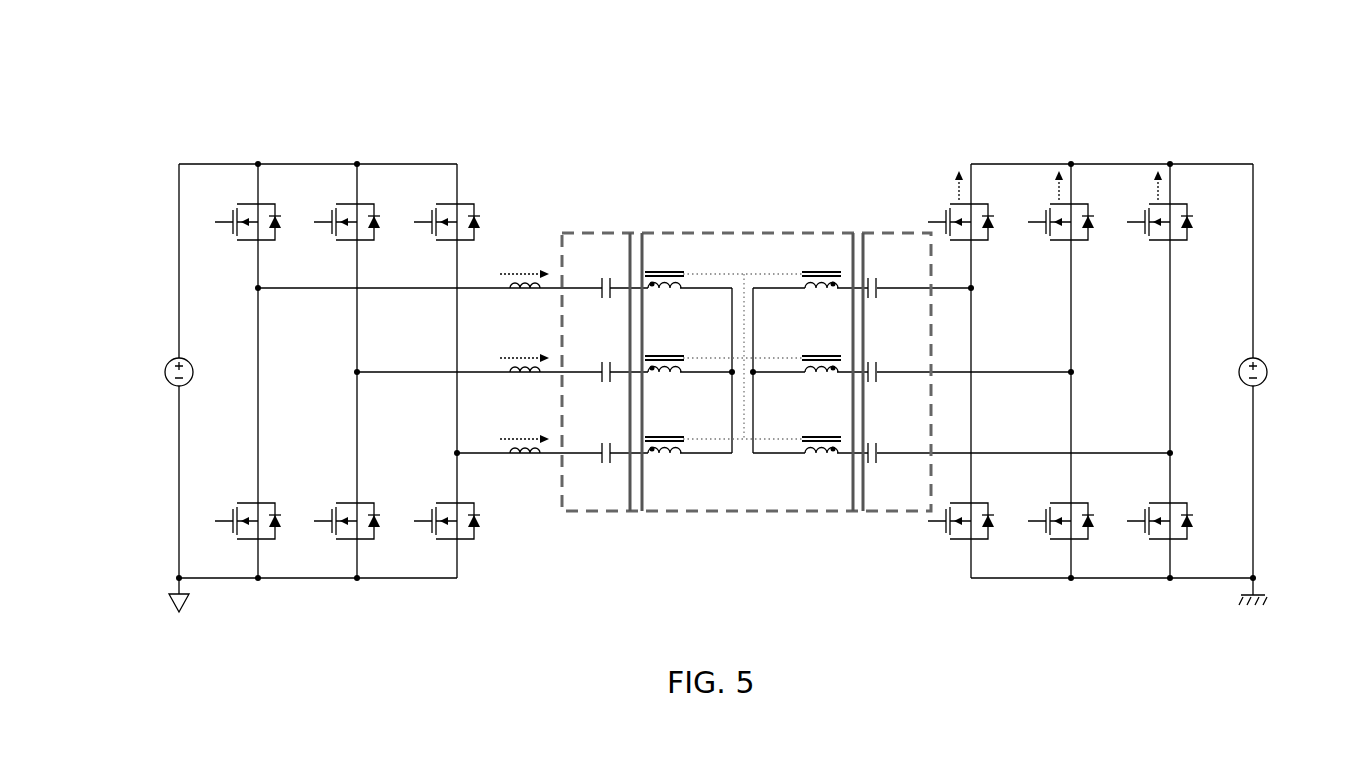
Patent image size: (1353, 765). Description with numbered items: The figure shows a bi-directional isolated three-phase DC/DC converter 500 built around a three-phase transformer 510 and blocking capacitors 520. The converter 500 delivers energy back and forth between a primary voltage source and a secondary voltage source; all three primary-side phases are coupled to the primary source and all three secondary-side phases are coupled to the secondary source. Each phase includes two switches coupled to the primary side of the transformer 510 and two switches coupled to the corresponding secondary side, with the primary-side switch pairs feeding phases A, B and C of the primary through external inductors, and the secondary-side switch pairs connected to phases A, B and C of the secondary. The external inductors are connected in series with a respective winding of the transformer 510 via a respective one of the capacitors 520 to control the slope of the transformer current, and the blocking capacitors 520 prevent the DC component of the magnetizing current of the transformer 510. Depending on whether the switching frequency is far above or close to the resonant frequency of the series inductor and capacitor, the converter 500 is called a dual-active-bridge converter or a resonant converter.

The bi-directional isolated three-phase DC/DC converter 500 is at (582, 70).
The three-phase transformer 510 is at (731, 232).
The blocking capacitors 520 is at (592, 232).